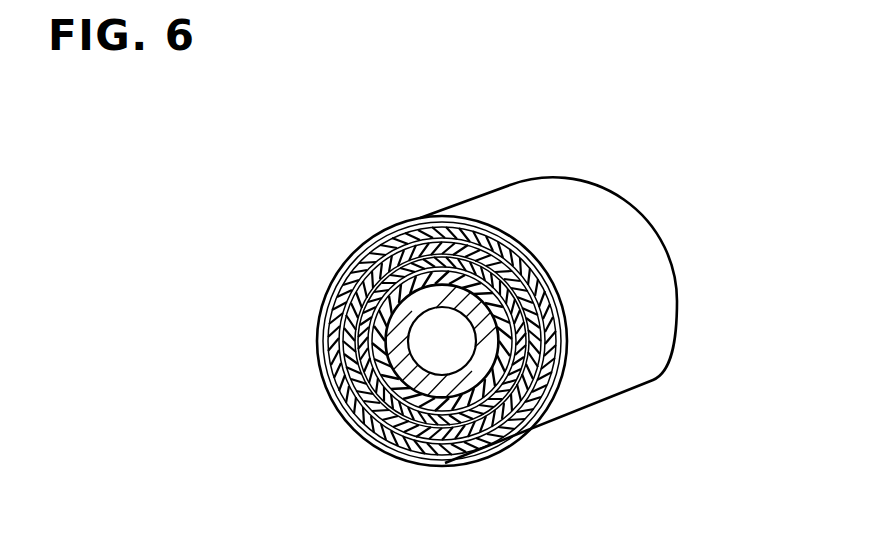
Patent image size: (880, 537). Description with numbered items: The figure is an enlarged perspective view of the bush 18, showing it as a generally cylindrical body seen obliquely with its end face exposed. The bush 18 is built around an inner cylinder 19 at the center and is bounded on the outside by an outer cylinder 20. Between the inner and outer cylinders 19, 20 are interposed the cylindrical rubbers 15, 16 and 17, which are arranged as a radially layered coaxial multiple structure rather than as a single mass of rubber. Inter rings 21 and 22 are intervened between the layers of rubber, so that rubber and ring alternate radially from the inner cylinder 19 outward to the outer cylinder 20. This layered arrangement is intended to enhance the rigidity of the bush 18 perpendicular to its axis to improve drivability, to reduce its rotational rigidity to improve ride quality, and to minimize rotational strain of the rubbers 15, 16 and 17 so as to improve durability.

The cylindrical rubber 15 is at (340, 275).
The cylindrical rubber 16 is at (333, 313).
The cylindrical rubber 17 is at (333, 363).
The bush 18 is at (485, 293).
The inner cylinder 19 is at (385, 428).
The outer cylinder 20 is at (638, 233).
The inter ring 21 is at (547, 400).
The inter ring 22 is at (512, 420).